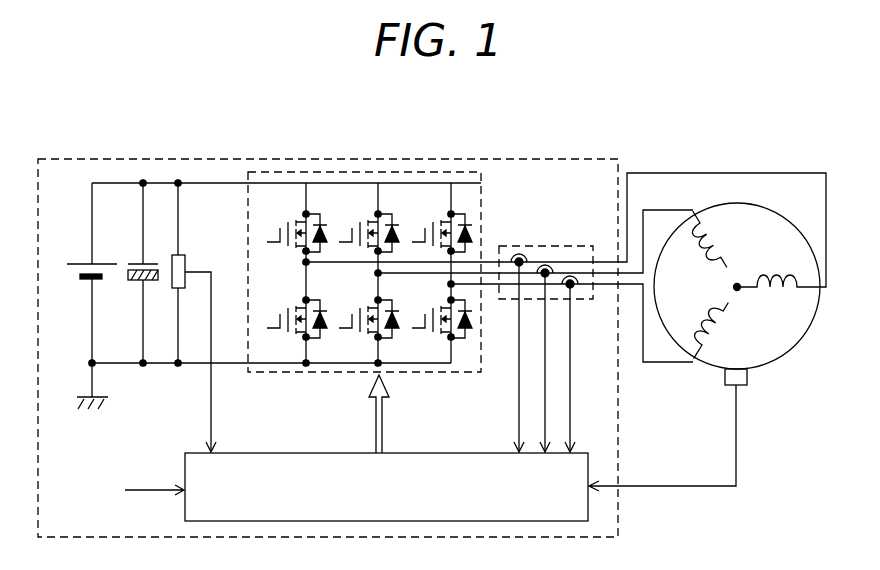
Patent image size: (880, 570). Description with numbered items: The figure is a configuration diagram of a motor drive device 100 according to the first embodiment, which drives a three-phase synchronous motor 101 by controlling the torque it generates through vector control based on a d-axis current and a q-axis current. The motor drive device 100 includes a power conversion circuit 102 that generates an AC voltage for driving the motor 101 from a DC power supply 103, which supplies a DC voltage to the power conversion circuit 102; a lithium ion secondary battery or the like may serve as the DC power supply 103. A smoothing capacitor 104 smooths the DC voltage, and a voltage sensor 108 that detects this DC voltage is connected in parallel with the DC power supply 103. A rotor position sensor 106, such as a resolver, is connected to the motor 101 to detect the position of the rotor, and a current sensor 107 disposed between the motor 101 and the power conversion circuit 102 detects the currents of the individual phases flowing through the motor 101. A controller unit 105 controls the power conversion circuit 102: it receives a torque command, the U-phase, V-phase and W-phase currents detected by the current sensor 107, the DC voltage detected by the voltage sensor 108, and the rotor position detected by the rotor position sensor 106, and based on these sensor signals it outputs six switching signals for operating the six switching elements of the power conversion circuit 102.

The motor drive device 100 is at (527, 158).
The three-phase synchronous motor 101 is at (796, 343).
The power conversion circuit 102 is at (486, 193).
The DC power supply 103 is at (80, 261).
The smoothing capacitor 104 is at (133, 261).
The controller unit 105 is at (281, 453).
The rotor position sensor 106 is at (723, 386).
The current sensor 107 is at (511, 246).
The voltage sensor 108 is at (188, 256).